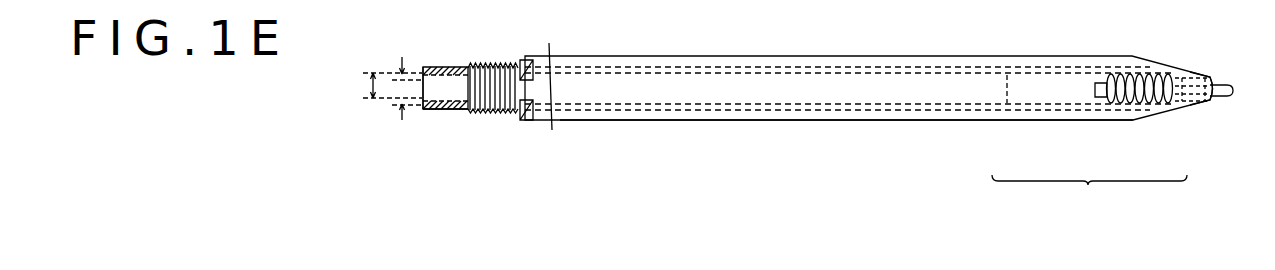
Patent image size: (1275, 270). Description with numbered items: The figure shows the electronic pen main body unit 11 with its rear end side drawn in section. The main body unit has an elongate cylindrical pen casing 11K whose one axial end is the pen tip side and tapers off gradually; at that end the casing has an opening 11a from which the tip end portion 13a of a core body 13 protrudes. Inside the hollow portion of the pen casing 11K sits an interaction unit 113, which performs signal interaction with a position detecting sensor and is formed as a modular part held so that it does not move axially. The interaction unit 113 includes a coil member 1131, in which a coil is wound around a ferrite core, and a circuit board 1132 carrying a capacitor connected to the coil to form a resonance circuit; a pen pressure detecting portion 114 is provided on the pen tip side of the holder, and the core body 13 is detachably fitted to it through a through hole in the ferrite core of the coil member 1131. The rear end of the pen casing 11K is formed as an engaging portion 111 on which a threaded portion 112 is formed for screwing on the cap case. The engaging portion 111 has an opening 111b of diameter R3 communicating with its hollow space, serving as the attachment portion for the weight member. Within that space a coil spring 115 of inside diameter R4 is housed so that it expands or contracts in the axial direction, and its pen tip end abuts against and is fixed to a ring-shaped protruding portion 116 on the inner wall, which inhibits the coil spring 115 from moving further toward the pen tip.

The electronic pen main body unit 11 is at (730, 58).
The pen casing 11K is at (848, 119).
The opening 11a is at (1217, 99).
The engaging portion 111 is at (440, 109).
The opening 111b is at (432, 85).
The threaded portion 112 is at (471, 63).
The interaction unit 113 is at (1089, 147).
The coil member 1131 is at (1142, 102).
The circuit board 1132 is at (995, 106).
The pen pressure detecting portion 114 is at (1058, 102).
The coil spring 115 is at (465, 110).
The ring-shaped protruding portion 116 is at (525, 77).
The core body 13 is at (1183, 95).
The tip end portion 13a is at (1220, 86).
The diameter of the opening R3 is at (367, 87).
The inside diameter of the coil spring R4 is at (400, 82).